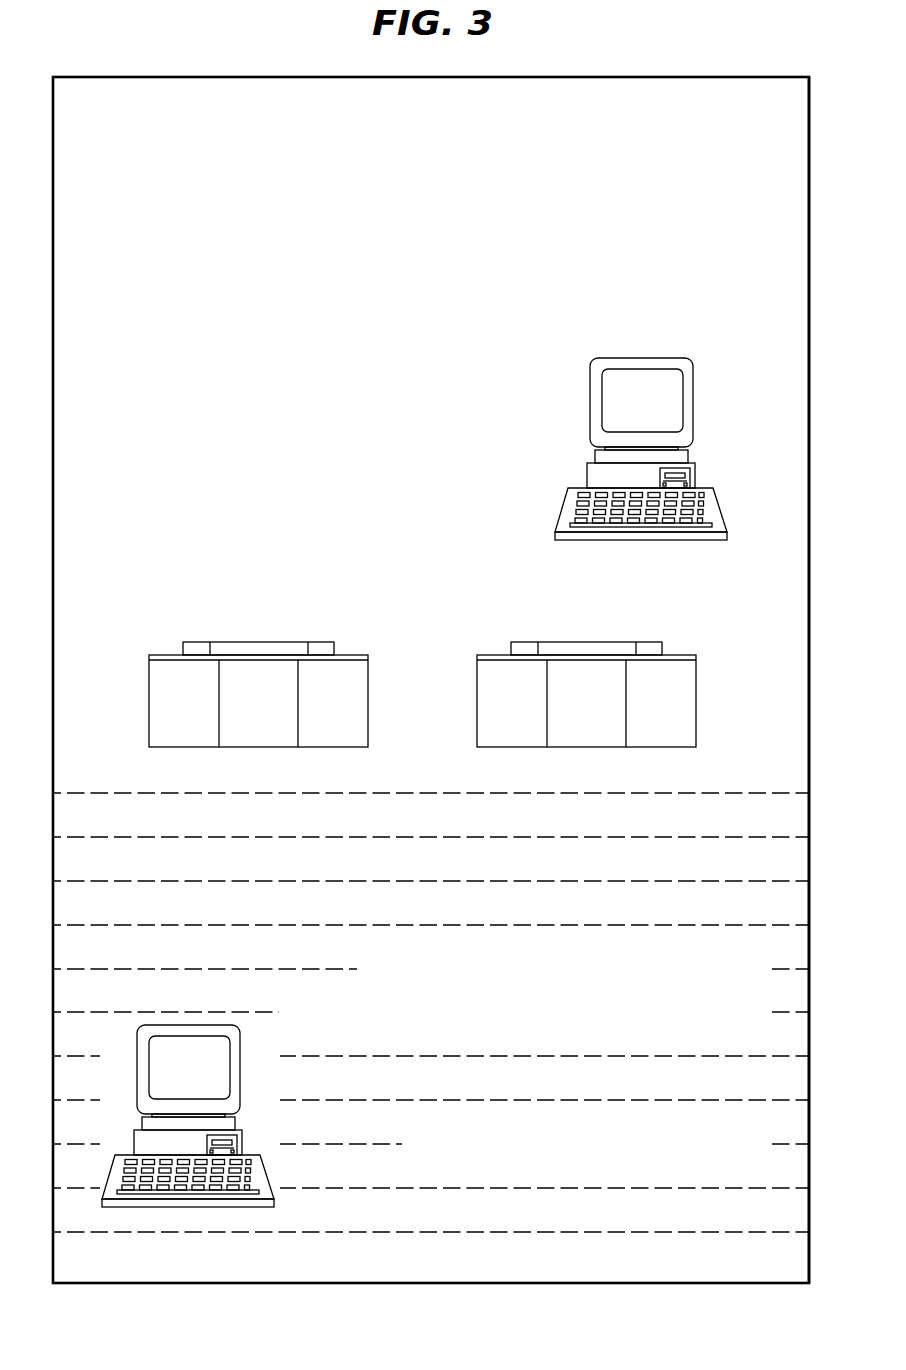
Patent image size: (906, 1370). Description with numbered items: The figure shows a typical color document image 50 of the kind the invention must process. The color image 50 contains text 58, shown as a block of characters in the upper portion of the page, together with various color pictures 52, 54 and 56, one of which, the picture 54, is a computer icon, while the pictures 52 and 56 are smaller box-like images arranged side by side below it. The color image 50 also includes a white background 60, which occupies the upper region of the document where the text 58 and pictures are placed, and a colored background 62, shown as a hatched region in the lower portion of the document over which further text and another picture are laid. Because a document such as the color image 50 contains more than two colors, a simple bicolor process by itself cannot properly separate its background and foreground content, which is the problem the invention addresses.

The color image 50 is at (690, 77).
The color picture 52 is at (268, 642).
The color picture 54 is at (693, 402).
The color picture 56 is at (596, 642).
The text 58 is at (573, 263).
The white background 60 is at (787, 238).
The colored background 62 is at (455, 888).